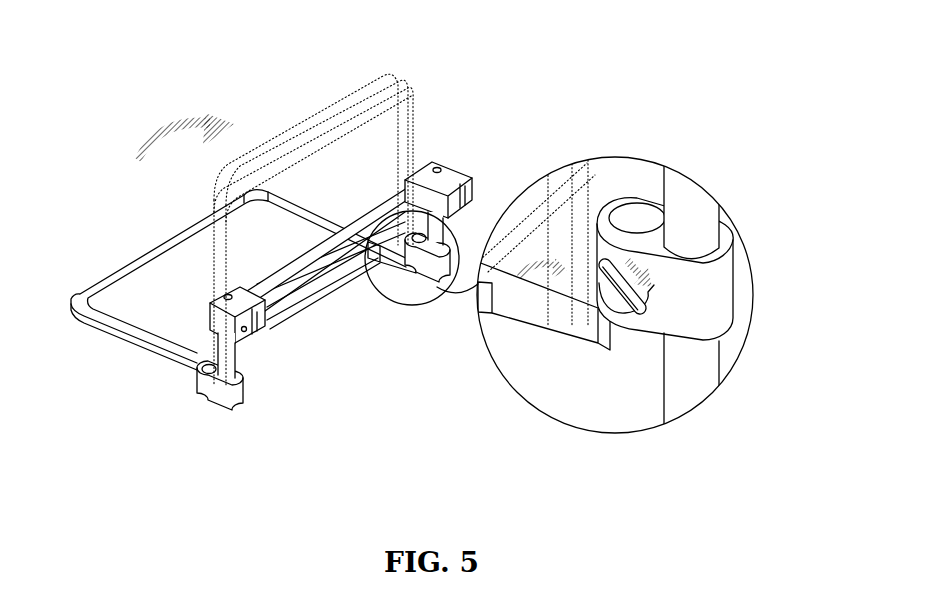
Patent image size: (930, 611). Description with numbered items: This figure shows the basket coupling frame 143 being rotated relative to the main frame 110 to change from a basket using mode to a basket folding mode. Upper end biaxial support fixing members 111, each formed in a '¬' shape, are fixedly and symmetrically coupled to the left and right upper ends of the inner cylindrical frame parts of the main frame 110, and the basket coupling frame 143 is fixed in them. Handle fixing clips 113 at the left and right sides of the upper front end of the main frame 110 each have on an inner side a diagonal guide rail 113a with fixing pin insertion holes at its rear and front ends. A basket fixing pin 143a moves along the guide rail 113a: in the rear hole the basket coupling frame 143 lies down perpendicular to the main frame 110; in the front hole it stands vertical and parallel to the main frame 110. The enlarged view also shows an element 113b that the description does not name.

The main frame 110 is at (686, 217).
The upper end biaxial support fixing member 111 is at (450, 176).
The handle fixing clip 113 is at (700, 288).
The guide rail 113a is at (641, 297).
The hinge pin 113b is at (604, 262).
The basket coupling frame 143 is at (175, 240).
The basket fixing pin 143a is at (633, 310).